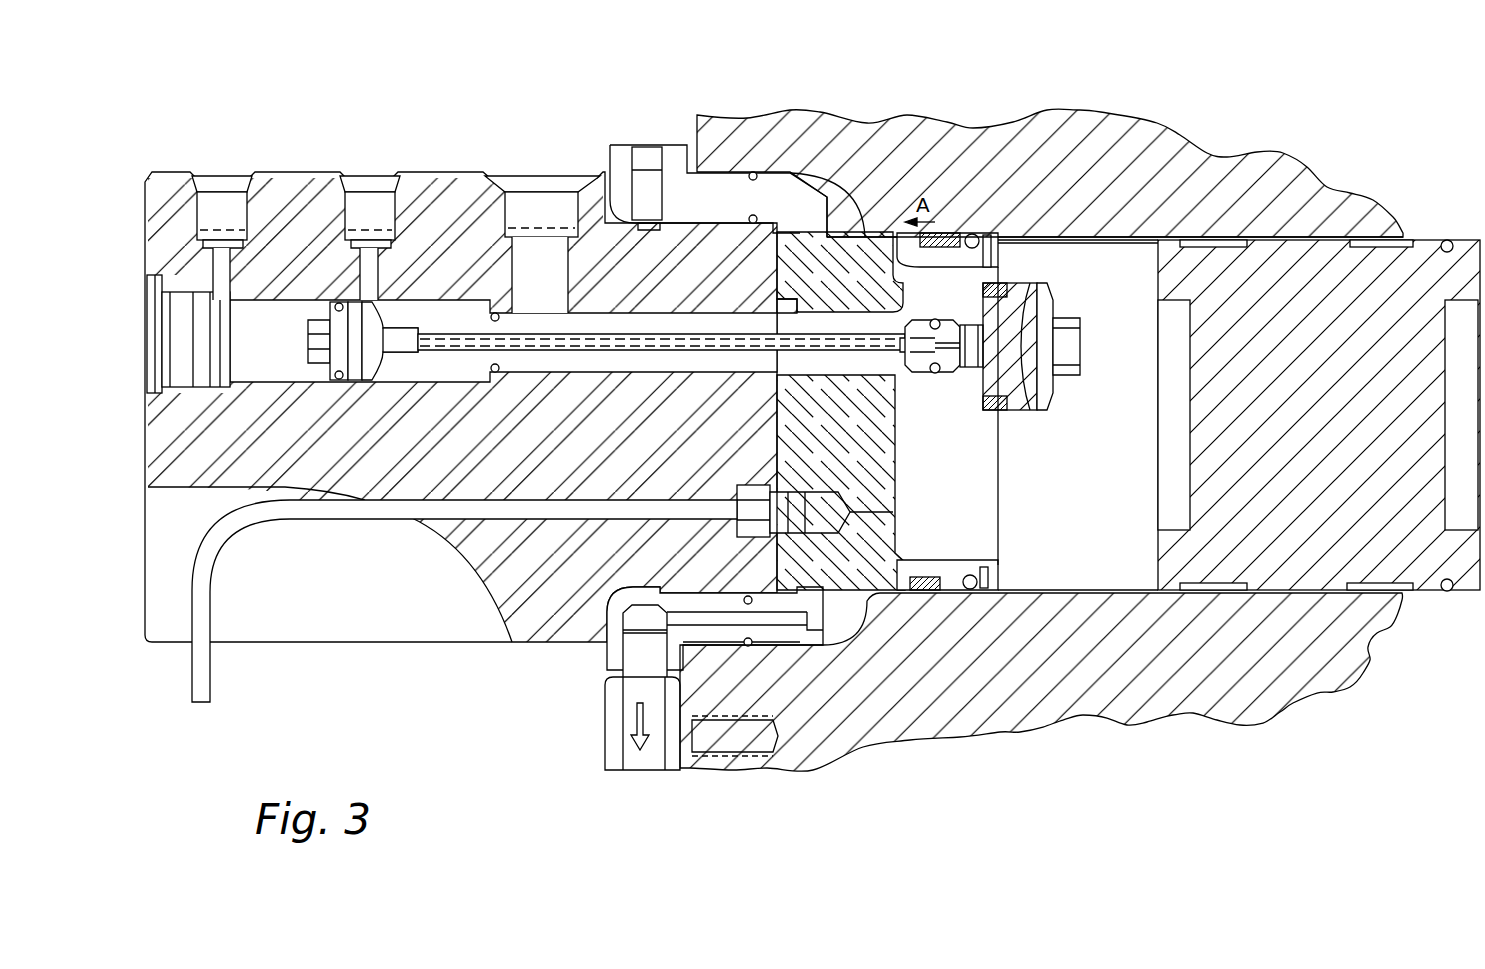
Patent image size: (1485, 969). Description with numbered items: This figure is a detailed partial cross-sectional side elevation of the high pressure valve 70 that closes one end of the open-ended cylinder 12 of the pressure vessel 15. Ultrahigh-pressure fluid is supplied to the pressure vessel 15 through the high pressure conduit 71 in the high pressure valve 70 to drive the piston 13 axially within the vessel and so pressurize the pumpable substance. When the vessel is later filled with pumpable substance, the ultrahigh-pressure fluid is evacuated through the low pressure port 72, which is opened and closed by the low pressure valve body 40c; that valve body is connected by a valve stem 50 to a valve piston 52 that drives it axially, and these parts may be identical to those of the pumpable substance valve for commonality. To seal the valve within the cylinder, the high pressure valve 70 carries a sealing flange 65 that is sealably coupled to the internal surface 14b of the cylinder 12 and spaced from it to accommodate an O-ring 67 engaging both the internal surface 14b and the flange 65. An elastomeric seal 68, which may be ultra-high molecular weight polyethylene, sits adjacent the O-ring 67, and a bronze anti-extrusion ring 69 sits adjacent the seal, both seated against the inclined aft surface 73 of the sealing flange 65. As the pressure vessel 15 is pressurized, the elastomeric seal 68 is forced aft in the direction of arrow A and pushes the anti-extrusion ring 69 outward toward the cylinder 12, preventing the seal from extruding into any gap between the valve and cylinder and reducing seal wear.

The high pressure valve 70 is at (158, 148).
The valve piston 52 is at (310, 208).
The high pressure conduit 71 is at (290, 520).
The valve stem 50 is at (596, 358).
The low pressure port 72 is at (851, 324).
The aft surface 73 is at (893, 228).
The elastomeric seal 68 is at (940, 233).
The O-ring 67 is at (974, 234).
The sealing flange 65 is at (1030, 235).
The anti-extrusion ring 69 is at (925, 242).
The low pressure valve body 40c is at (1057, 288).
The pressure vessel 15 is at (1110, 450).
The internal surface 14b is at (1130, 237).
The cylinder 12 is at (1323, 172).
The piston 13 is at (1427, 267).